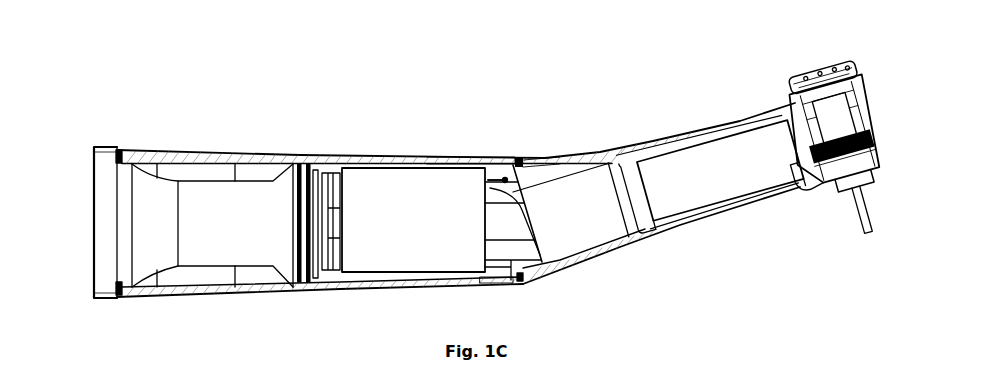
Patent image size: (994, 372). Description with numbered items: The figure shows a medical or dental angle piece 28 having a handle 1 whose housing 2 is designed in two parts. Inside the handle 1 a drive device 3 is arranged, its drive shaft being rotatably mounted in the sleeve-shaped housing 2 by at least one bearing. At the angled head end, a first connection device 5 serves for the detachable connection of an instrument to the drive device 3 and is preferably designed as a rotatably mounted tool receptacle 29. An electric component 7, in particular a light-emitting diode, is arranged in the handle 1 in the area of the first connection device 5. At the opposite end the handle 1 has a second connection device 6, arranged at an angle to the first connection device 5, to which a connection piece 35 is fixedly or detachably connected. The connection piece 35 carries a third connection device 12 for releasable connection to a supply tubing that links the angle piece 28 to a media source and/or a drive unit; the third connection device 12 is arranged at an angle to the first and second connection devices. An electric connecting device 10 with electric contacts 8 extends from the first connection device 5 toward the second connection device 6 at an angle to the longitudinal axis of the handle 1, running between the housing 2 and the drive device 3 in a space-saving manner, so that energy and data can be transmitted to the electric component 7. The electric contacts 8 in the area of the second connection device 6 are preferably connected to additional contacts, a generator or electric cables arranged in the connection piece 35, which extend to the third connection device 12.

The handle 1 is at (601, 153).
The housing 2 is at (605, 256).
The drive device 3 is at (710, 178).
The first connection device 5 is at (857, 178).
The second connection device 6 is at (523, 268).
The electric component 7 is at (795, 205).
The electric contact 8 is at (490, 171).
The electric connecting device 10 is at (539, 176).
The third connection device 12 is at (95, 208).
The angle piece 28 is at (661, 47).
The tool receptacle 29 is at (836, 123).
The connection piece 35 is at (376, 158).